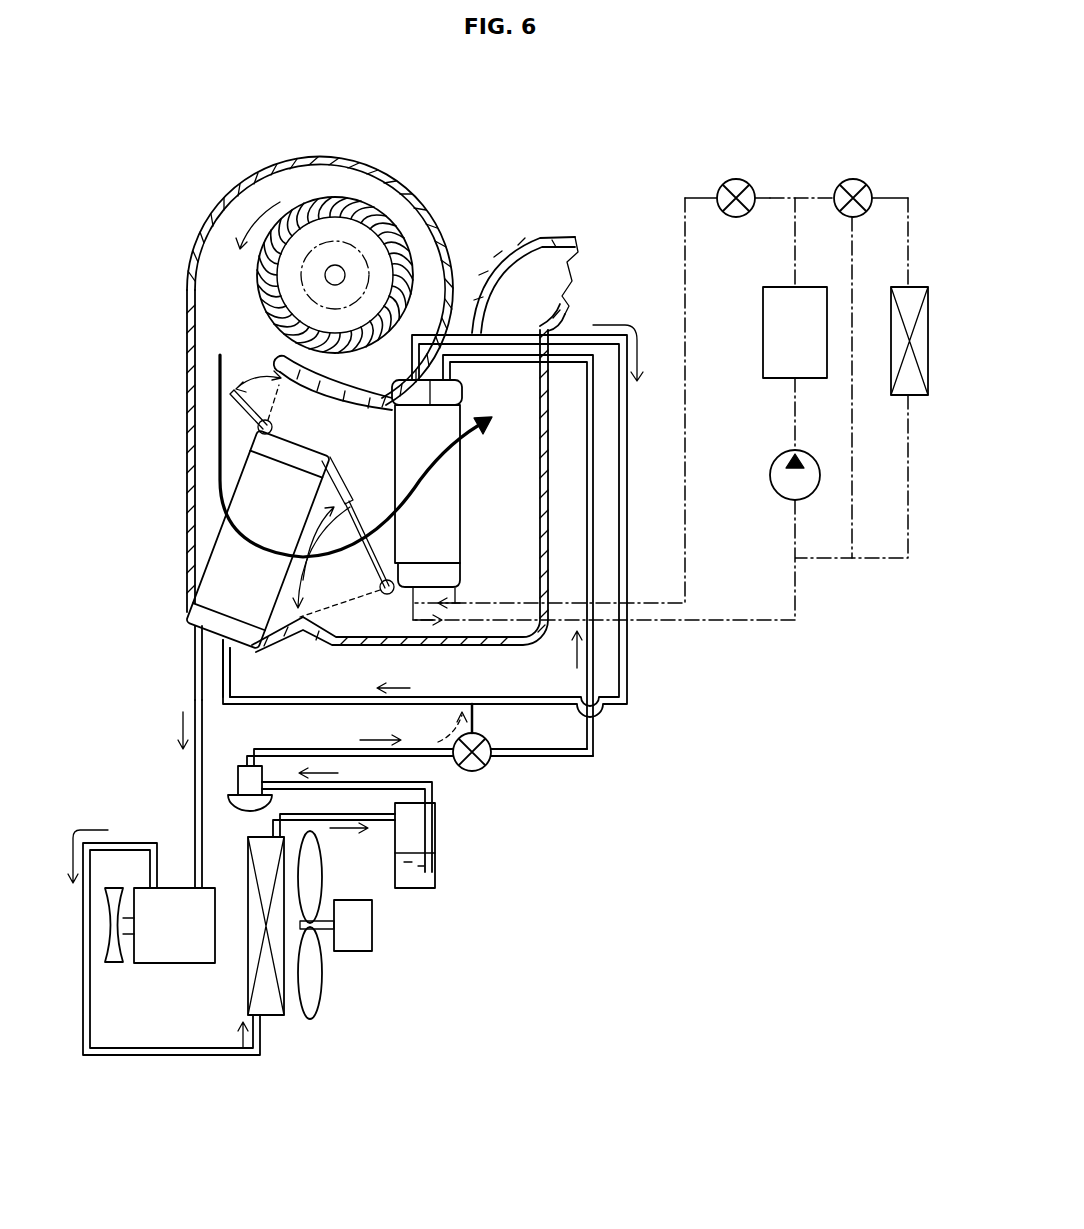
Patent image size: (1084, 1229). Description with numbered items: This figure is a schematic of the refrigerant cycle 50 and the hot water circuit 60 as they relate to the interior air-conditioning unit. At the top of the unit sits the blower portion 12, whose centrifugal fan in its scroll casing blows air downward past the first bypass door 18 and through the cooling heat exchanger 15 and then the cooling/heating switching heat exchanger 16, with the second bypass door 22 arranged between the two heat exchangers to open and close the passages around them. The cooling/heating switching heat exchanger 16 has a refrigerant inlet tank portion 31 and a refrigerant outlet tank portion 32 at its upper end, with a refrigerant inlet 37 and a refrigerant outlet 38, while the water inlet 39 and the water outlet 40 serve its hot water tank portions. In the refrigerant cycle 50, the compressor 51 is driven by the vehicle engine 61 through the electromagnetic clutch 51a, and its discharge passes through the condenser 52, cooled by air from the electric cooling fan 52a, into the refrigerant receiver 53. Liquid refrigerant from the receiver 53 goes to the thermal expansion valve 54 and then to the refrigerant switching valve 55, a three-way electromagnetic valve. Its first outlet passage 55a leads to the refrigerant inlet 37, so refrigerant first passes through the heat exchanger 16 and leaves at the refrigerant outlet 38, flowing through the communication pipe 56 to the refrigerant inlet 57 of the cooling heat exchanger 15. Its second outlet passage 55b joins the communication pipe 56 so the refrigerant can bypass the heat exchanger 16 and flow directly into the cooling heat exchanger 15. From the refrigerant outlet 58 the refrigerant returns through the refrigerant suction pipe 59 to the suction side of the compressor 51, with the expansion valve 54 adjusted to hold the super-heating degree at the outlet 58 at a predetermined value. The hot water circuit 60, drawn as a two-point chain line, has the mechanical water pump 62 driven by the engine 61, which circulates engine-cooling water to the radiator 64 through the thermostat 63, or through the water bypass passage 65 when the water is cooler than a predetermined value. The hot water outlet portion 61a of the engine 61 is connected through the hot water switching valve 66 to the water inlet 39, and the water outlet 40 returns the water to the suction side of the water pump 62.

The blower portion 12 is at (414, 190).
The refrigerant inlet 37 is at (460, 362).
The refrigerant outlet 38 is at (287, 363).
The refrigerant outlet tank portion 32 is at (280, 374).
The first bypass door 18 is at (233, 400).
The cooling heat exchanger 15 is at (204, 540).
The second bypass door 22 is at (365, 535).
The cooling/heating switching heat exchanger 16 is at (474, 505).
The refrigerant inlet tank portion 31 is at (458, 380).
The water inlet 39 is at (460, 590).
The water outlet 40 is at (413, 590).
The communication pipe 56 is at (628, 672).
The refrigerant inlet 57 is at (231, 652).
The refrigerant outlet 58 is at (190, 636).
The refrigerant suction pipe 59 is at (194, 772).
The refrigerant switching valve 55 is at (480, 771).
The first outlet passage 55a is at (487, 767).
The second outlet passage 55b is at (485, 738).
The thermal expansion valve 54 is at (243, 782).
The refrigerant receiver 53 is at (437, 832).
The compressor 51 is at (170, 888).
The electromagnetic clutch 51a is at (115, 886).
The refrigerant cycle 50 is at (163, 1065).
The condenser 52 is at (272, 1016).
The electric cooling fan 52a is at (313, 1000).
The hot water circuit 60 is at (809, 179).
The hot water switching valve 66 is at (737, 178).
The thermostat 63 is at (872, 190).
The vehicle engine 61 is at (817, 287).
The hot water outlet portion 61a is at (790, 287).
The radiator 64 is at (915, 395).
The mechanical water pump 62 is at (808, 500).
The water bypass passage 65 is at (853, 470).